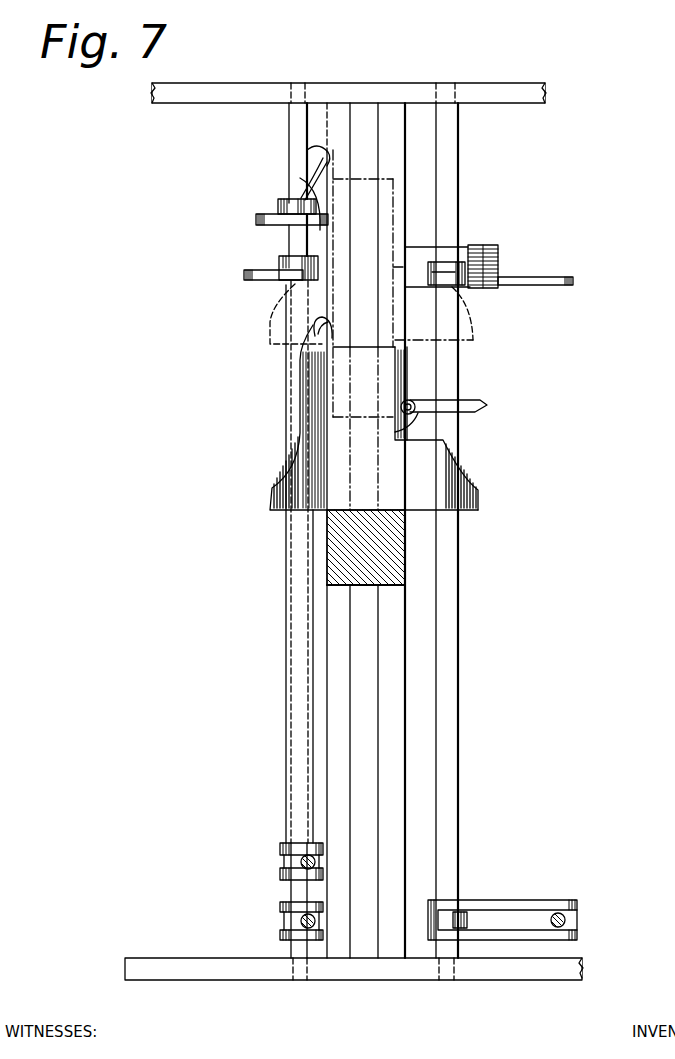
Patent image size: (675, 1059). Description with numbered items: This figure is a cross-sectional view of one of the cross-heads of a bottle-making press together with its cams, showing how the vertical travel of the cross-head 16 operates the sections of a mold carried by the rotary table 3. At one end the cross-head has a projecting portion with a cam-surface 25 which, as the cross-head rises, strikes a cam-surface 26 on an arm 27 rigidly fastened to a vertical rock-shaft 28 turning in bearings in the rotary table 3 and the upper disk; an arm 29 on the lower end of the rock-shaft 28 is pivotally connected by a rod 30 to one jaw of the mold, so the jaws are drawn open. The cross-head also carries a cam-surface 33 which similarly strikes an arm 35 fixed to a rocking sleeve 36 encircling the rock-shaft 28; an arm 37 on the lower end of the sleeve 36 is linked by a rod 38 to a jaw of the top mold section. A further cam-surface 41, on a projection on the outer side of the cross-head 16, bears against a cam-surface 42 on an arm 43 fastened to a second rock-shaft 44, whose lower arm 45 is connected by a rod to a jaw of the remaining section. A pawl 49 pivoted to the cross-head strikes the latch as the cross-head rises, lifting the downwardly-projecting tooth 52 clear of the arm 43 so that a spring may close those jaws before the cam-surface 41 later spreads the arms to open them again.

The rotary table 3 is at (210, 972).
The cross-head 16 is at (406, 549).
The cam-surface 25 is at (314, 327).
The cam-surface 26 is at (306, 187).
The arm 27 is at (256, 219).
The rock-shaft 28 is at (296, 128).
The arm 29 is at (282, 908).
The rod 30 is at (300, 924).
The cam-surface 33 is at (288, 472).
The arm 35 is at (257, 271).
The rocking sleeve 36 is at (296, 592).
The arm 37 is at (282, 852).
The rod 38 is at (300, 864).
The cam-surface 41 is at (474, 484).
The cam-surface 42 is at (465, 291).
The arm 43 is at (562, 279).
The rock-shaft 44 is at (448, 662).
The arm 45 is at (490, 902).
The pawl 49 is at (485, 400).
The tooth 52 is at (492, 280).